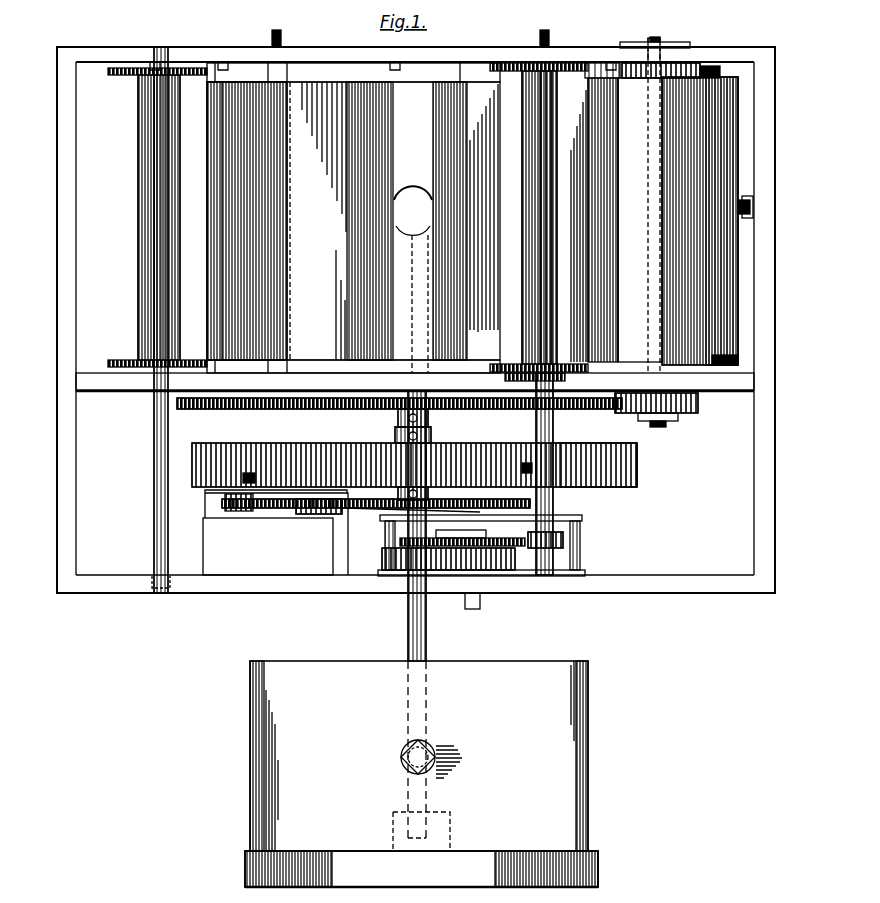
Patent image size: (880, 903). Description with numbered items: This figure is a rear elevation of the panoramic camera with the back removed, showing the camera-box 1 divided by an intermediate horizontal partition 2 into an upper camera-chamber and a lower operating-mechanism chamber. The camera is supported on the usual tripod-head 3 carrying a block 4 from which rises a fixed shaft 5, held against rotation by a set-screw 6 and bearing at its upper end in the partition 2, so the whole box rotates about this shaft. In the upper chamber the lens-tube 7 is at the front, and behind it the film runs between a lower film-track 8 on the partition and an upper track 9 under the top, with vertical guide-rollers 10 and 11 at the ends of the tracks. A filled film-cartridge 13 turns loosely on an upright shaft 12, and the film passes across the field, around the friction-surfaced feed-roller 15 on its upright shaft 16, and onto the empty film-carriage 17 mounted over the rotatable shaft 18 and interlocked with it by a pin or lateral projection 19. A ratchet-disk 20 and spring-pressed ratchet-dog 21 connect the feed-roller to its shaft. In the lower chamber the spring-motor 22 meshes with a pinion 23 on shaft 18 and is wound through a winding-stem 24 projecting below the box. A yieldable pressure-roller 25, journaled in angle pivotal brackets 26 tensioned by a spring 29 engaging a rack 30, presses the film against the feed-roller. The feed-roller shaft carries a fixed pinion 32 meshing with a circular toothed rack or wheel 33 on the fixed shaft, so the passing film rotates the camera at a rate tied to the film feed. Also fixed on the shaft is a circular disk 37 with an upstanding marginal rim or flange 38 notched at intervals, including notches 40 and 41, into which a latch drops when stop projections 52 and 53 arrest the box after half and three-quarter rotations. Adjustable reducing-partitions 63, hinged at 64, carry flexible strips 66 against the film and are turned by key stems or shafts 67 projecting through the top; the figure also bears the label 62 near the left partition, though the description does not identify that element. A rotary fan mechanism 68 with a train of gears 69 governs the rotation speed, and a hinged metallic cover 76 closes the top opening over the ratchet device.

The camera-box 1 is at (66, 362).
The intermediate horizontal partition 2 is at (757, 380).
The tripod-head 3 is at (246, 858).
The block 4 is at (258, 776).
The fixed shaft 5 is at (428, 634).
The set-screw 6 is at (430, 748).
The lens-tube 7 is at (414, 200).
The lower film-track 8 is at (414, 360).
The upper track 9 is at (414, 76).
The vertical guide-roller 10 is at (222, 250).
The vertical guide-roller 11 is at (612, 136).
The upright shaft 12 is at (153, 444).
The filled film-cartridge 13 is at (142, 184).
The feed-roller 15 is at (640, 220).
The upright shaft 16 is at (656, 427).
The empty film-carriage 17 is at (526, 250).
The upright rotatable shaft 18 is at (553, 430).
The pin or lateral projection 19 is at (536, 373).
The ratchet-disk 20 is at (650, 62).
The spring-pressed ratchet-dog 21 is at (680, 62).
The spring-motor 22 is at (452, 570).
The pinion 23 is at (566, 546).
The winding-stem 24 is at (482, 606).
The pressure-roller 25 is at (730, 132).
The angle pivotal brackets 26 is at (722, 70).
The spring 29 is at (752, 206).
The rack 30 is at (753, 212).
The fixed pinion 32 is at (694, 413).
The circular toothed rack or wheel 33 is at (280, 409).
The circular disk 37 is at (414, 465).
The upstanding marginal rim or flange 38 is at (640, 462).
The notch 40 is at (366, 512).
The notch 41 is at (428, 444).
The stop projection 52 is at (526, 462).
The stop projection 53 is at (248, 471).
The drum section 62 is at (240, 192).
The adjustable reducing-partitions 63 is at (326, 98).
The hinge 64 is at (292, 118).
The flexible strips 66 is at (426, 155).
The key stems or shafts 67 is at (284, 46).
The rotary fan mechanism 68 is at (275, 532).
The train of gears 69 is at (312, 498).
The metallic cover 76 is at (662, 40).